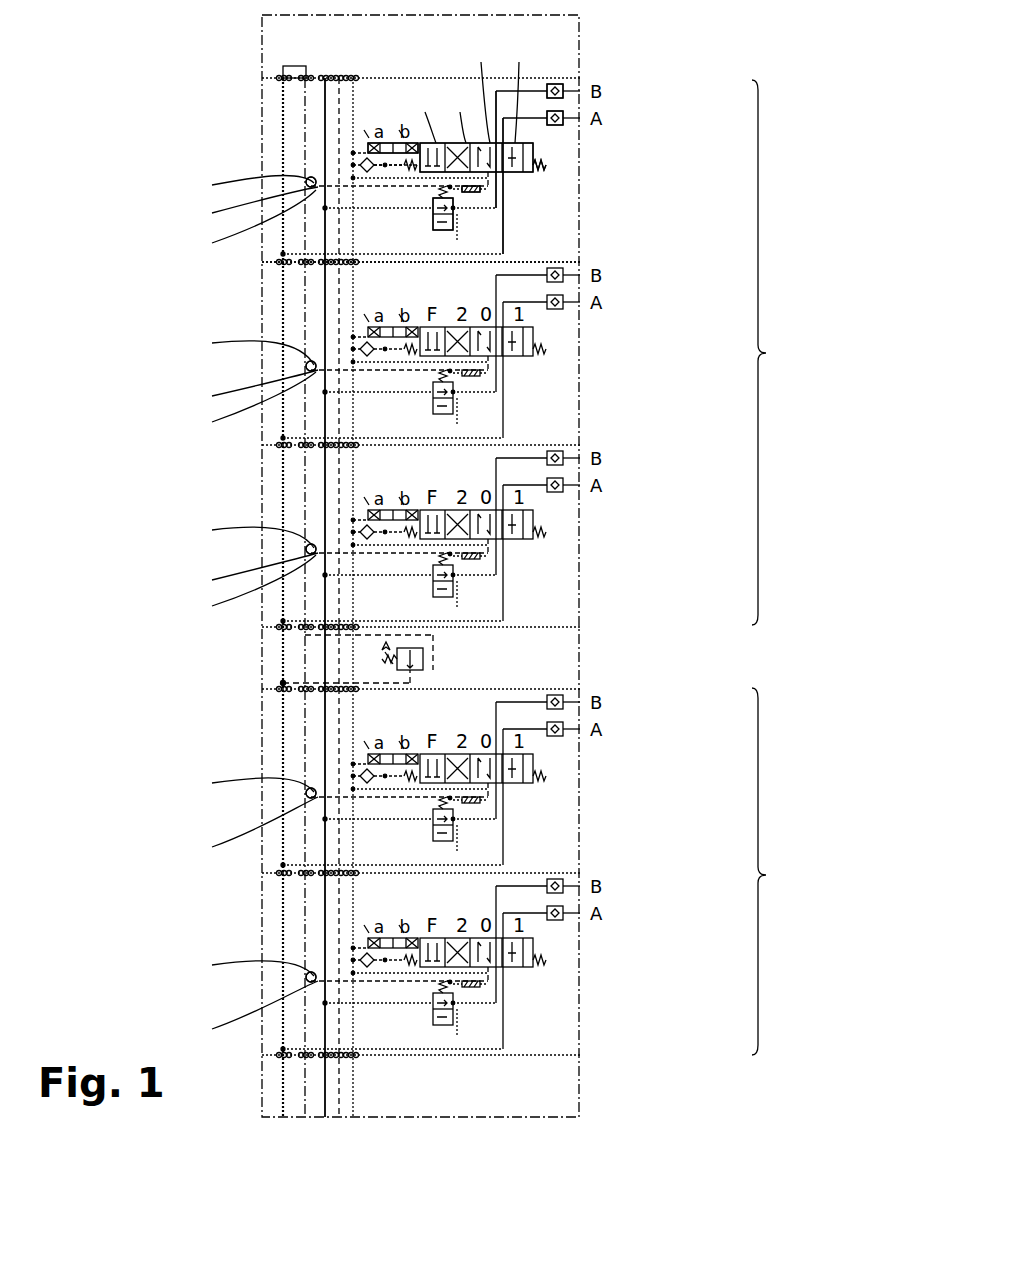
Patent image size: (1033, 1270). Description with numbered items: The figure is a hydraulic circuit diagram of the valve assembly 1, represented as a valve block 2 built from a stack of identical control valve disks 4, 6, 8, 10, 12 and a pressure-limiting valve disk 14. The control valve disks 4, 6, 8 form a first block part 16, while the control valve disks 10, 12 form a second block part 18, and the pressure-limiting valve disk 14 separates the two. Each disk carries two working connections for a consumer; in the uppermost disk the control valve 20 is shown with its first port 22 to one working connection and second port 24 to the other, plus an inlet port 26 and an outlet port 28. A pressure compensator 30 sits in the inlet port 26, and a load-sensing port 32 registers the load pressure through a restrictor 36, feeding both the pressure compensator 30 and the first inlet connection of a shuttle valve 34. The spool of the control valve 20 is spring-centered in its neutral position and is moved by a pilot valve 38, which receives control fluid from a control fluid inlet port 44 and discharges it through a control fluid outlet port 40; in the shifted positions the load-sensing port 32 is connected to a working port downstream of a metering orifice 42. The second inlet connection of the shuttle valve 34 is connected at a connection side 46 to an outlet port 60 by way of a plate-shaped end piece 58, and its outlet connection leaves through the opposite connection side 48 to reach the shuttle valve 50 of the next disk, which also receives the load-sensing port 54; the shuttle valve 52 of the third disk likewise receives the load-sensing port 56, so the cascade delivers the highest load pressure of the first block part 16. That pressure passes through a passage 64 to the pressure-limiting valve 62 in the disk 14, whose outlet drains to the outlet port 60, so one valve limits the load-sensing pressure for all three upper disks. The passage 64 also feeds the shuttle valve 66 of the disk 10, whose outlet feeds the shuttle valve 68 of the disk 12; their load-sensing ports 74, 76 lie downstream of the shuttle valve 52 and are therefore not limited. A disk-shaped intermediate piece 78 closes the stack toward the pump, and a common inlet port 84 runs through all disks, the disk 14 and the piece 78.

The valve assembly 1 is at (749, 53).
The valve block 2 is at (262, 125).
The control valve disk 4 is at (580, 163).
The control valve disk 6 is at (413, 350).
The control valve disk 8 is at (413, 533).
The control valve disk 10 is at (416, 777).
The control valve disk 12 is at (416, 961).
The pressure-limiting valve disk 14 is at (424, 655).
The first block part 16 is at (487, 332).
The second block part 18 is at (487, 871).
The control valve 20 is at (535, 147).
The first port 22 is at (572, 115).
The second port 24 is at (572, 85).
The inlet port 26 is at (504, 194).
The outlet port 28 is at (504, 222).
The pressure compensator 30 is at (433, 232).
The load-sensing port 32 is at (380, 190).
The shuttle valve 34 is at (316, 180).
The restrictor 36 is at (470, 195).
The pilot valve 38 is at (408, 143).
The control fluid outlet port 40 is at (418, 188).
The metering orifice 42 is at (535, 175).
The control fluid inlet port 44 is at (353, 88).
The connection side 46 is at (283, 73).
The connection side 48 is at (268, 263).
The shuttle valve 50 is at (247, 370).
The shuttle valve 52 is at (247, 556).
The load-sensing port 54 is at (399, 400).
The load-sensing port 56 is at (399, 582).
The plate-shaped end piece 58 is at (563, 32).
The outlet port 60 is at (283, 92).
The pressure-limiting valve 62 is at (425, 661).
The passage 64 is at (305, 658).
The shuttle valve 66 is at (247, 810).
The shuttle valve 68 is at (247, 993).
The load-sensing port 74 is at (399, 825).
The load-sensing port 76 is at (399, 1008).
The disk-shaped intermediate piece 78 is at (563, 1082).
The common inlet port 84 is at (325, 303).